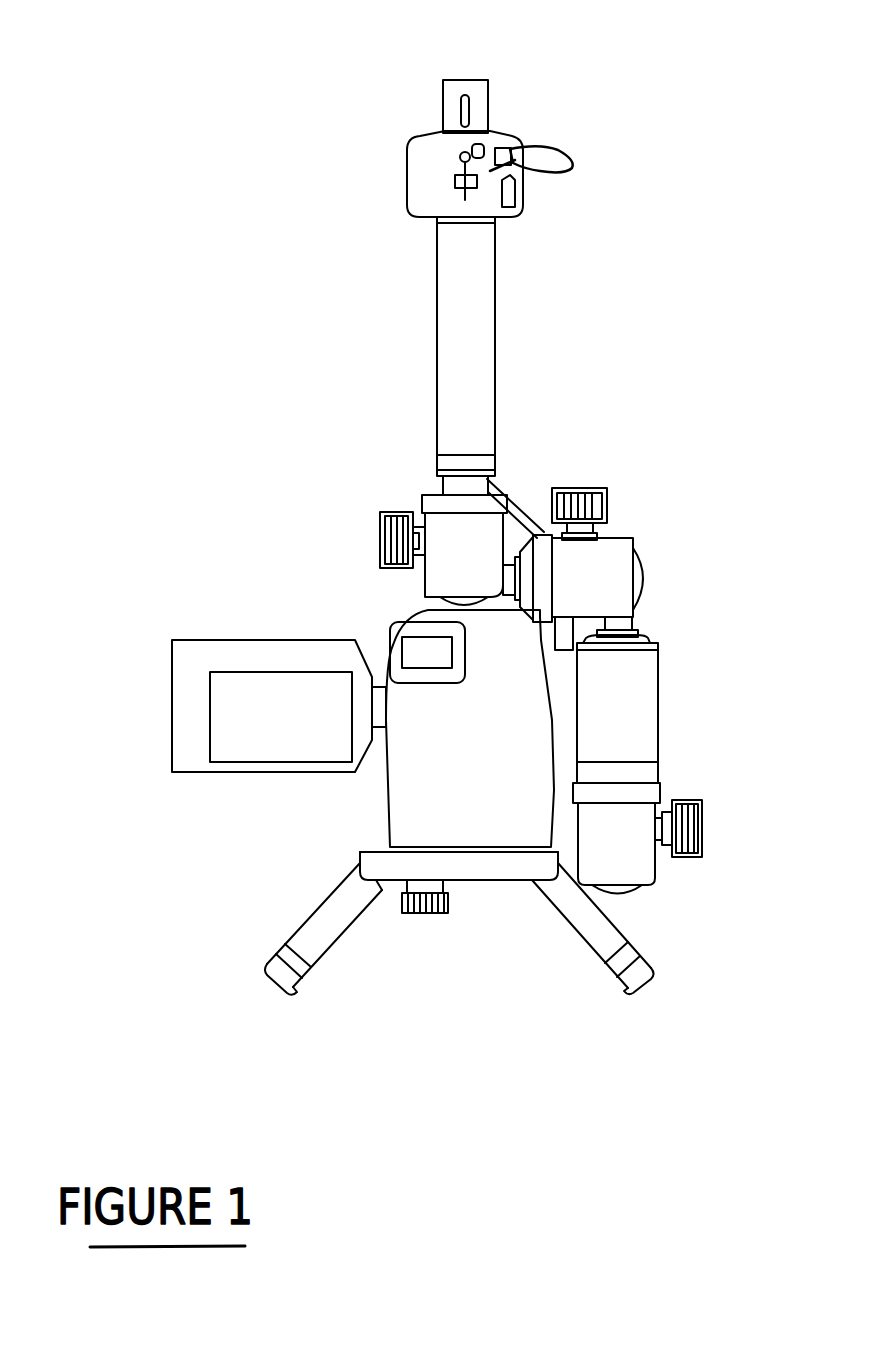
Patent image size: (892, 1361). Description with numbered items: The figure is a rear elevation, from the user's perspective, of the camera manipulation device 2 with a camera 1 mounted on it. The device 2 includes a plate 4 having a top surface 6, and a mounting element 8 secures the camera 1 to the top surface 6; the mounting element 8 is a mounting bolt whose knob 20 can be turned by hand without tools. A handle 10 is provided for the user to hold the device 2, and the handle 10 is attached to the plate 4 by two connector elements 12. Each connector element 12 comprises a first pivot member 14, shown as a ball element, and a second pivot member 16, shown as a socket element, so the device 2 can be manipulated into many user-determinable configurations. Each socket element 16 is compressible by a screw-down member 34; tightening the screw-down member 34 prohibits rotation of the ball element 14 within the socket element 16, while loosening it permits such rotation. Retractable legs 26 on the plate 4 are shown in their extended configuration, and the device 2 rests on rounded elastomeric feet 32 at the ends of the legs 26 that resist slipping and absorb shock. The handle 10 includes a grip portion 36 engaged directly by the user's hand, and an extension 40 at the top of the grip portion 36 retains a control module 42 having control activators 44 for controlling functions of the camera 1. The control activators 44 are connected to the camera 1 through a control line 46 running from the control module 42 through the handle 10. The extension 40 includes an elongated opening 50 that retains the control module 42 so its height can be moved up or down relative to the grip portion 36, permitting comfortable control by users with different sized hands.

The camera 1 is at (425, 770).
The camera manipulation device 2 is at (650, 340).
The plate 4 is at (500, 875).
The top surface 6 is at (377, 848).
The mounting element 8 is at (423, 913).
The handle 10 is at (497, 300).
The connector elements 12 is at (600, 560).
The first pivot member 14 is at (460, 605).
The second pivot member 16 is at (443, 573).
The knob 20 is at (443, 915).
The retractable legs 26 is at (335, 933).
The feet 32 is at (300, 972).
The screw-down member 34 is at (383, 528).
The grip portion 36 is at (463, 325).
The extension 40 is at (483, 110).
The control module 42 is at (428, 163).
The control activators 44 is at (509, 193).
The control line 46 is at (522, 513).
The elongated opening 50 is at (463, 110).